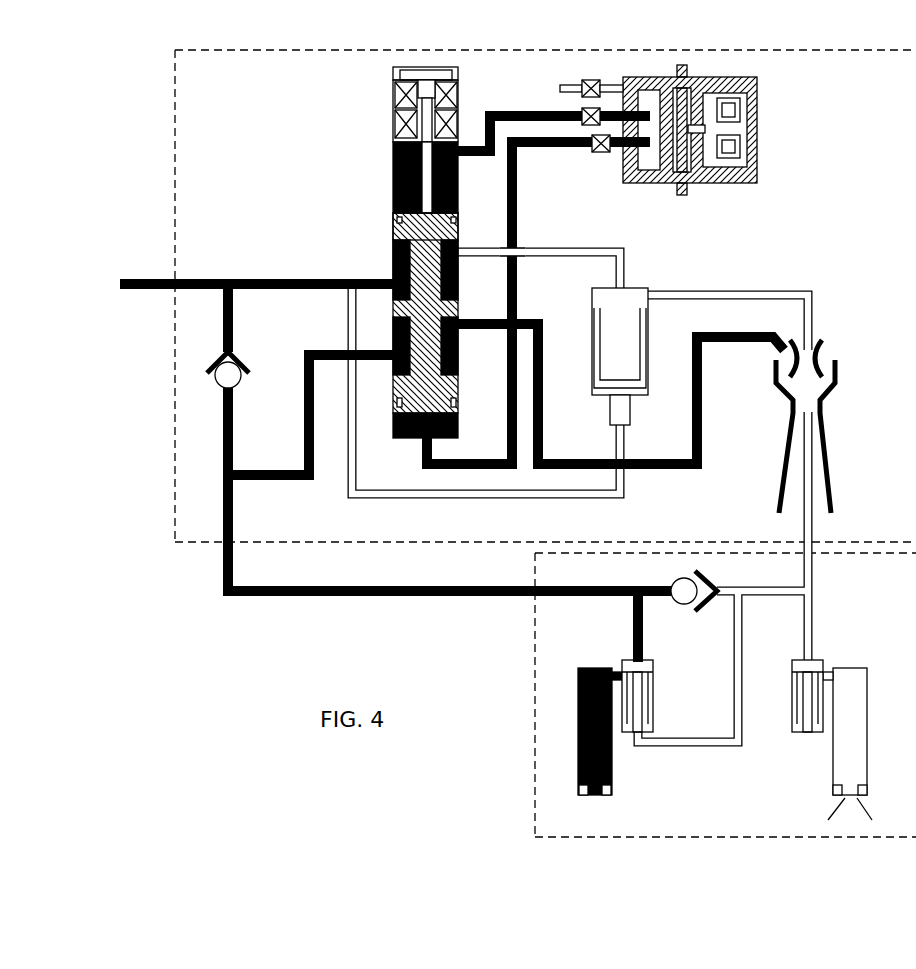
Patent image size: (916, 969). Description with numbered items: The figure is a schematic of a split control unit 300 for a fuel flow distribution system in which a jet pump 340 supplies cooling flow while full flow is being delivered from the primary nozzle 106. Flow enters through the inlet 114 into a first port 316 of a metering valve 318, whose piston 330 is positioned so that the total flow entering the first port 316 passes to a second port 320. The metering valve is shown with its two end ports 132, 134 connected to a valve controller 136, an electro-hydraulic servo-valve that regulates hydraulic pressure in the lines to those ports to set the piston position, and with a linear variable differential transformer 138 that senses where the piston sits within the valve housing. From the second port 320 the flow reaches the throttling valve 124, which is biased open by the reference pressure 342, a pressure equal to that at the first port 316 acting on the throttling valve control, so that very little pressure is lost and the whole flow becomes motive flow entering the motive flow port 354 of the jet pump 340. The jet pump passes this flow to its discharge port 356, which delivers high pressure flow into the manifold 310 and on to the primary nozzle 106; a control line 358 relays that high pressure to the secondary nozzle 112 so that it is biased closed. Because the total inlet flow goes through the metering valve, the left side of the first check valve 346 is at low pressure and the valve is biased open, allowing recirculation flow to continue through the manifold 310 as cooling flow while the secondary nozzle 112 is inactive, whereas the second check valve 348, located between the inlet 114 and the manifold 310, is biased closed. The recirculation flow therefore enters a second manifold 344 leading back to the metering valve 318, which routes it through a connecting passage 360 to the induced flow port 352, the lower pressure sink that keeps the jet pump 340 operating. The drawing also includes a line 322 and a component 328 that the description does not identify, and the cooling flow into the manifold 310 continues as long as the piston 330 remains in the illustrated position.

The primary nozzle 106 is at (860, 666).
The secondary nozzle 112 is at (598, 666).
The inlet 114 is at (119, 306).
The throttling valve 124 is at (650, 360).
The port 132 is at (552, 152).
The port 134 is at (537, 111).
The valve controller 136 is at (760, 147).
The linear variable differential transformer (LVDT) 138 is at (428, 66).
The split control unit 300 is at (152, 252).
The secondary manifold 310 is at (277, 598).
The first port 316 is at (410, 228).
The metering valve 318 is at (392, 155).
The second port 320 is at (470, 236).
The pressure line 322 is at (640, 248).
The piston 328 is at (660, 282).
The piston 330 is at (395, 218).
The jet pump 340 is at (840, 370).
The reference pressure 342 is at (445, 503).
The second manifold 344 is at (317, 460).
The first check valve 346 is at (682, 608).
The second check valve 348 is at (244, 368).
The induced flow port 352 is at (758, 368).
The motive flow port 354 is at (813, 316).
The discharge port 356 is at (813, 518).
The control line 358 is at (743, 748).
The connecting passage 360 is at (488, 333).